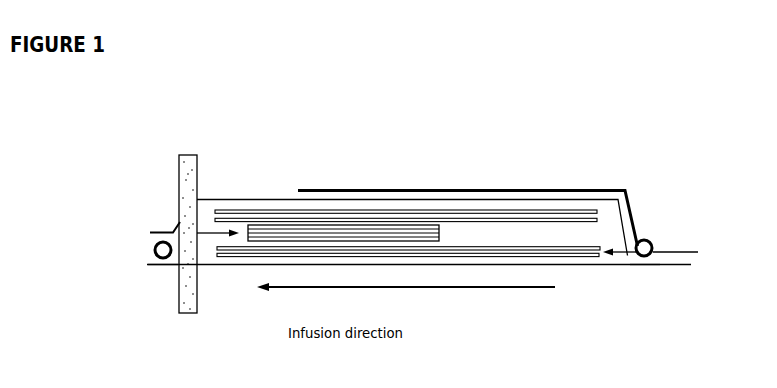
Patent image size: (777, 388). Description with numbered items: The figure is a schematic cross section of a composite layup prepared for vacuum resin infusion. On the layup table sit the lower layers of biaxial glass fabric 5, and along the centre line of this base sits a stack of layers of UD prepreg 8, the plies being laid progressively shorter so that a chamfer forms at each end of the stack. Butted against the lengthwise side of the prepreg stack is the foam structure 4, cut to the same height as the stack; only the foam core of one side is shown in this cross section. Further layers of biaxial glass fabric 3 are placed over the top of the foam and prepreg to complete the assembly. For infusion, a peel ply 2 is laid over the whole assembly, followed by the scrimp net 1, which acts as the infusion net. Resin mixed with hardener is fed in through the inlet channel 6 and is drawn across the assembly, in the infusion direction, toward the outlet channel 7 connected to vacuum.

The scrimp net 1 is at (316, 180).
The peel ply 2 is at (576, 192).
The layers of biaxial glass fabric 3 is at (609, 210).
The foam structure 4 is at (598, 233).
The layers of biaxial glass fabric 5 is at (661, 243).
The inlet channel 6 is at (644, 274).
The outlet channel 7 is at (162, 274).
The layers of UD prepreg 8 is at (176, 240).